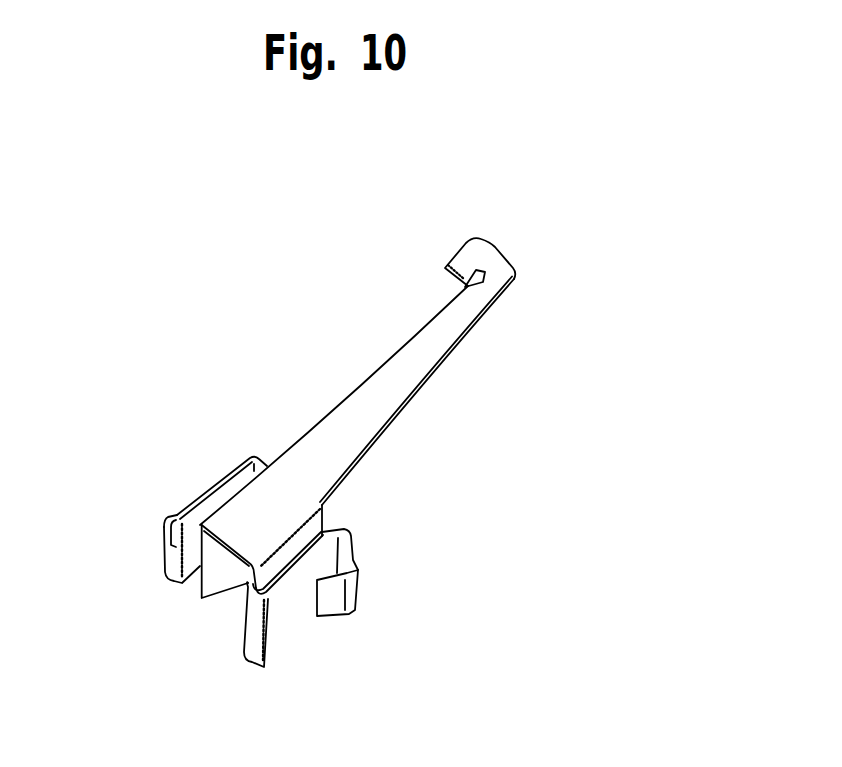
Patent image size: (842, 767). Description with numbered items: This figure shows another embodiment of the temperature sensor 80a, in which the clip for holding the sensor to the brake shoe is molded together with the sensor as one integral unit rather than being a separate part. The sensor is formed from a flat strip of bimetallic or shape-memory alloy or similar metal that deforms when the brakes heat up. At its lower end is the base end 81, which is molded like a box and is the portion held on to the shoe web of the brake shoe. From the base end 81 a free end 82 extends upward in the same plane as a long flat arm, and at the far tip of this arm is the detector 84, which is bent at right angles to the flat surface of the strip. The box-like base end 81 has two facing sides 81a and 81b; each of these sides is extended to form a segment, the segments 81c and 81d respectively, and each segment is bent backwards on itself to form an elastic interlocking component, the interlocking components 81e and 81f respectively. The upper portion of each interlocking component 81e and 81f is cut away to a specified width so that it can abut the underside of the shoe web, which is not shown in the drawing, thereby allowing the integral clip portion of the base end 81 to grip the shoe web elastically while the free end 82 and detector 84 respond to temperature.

The temperature sensor 80a is at (309, 379).
The base end 81 is at (257, 503).
The facing side 81a is at (316, 533).
The facing side 81b is at (199, 497).
The segment 81c is at (297, 618).
The segment 81d is at (192, 503).
The elastic interlocking component 81e is at (357, 597).
The elastic interlocking component 81f is at (170, 563).
The free end 82 is at (420, 383).
The detector 84 is at (445, 270).